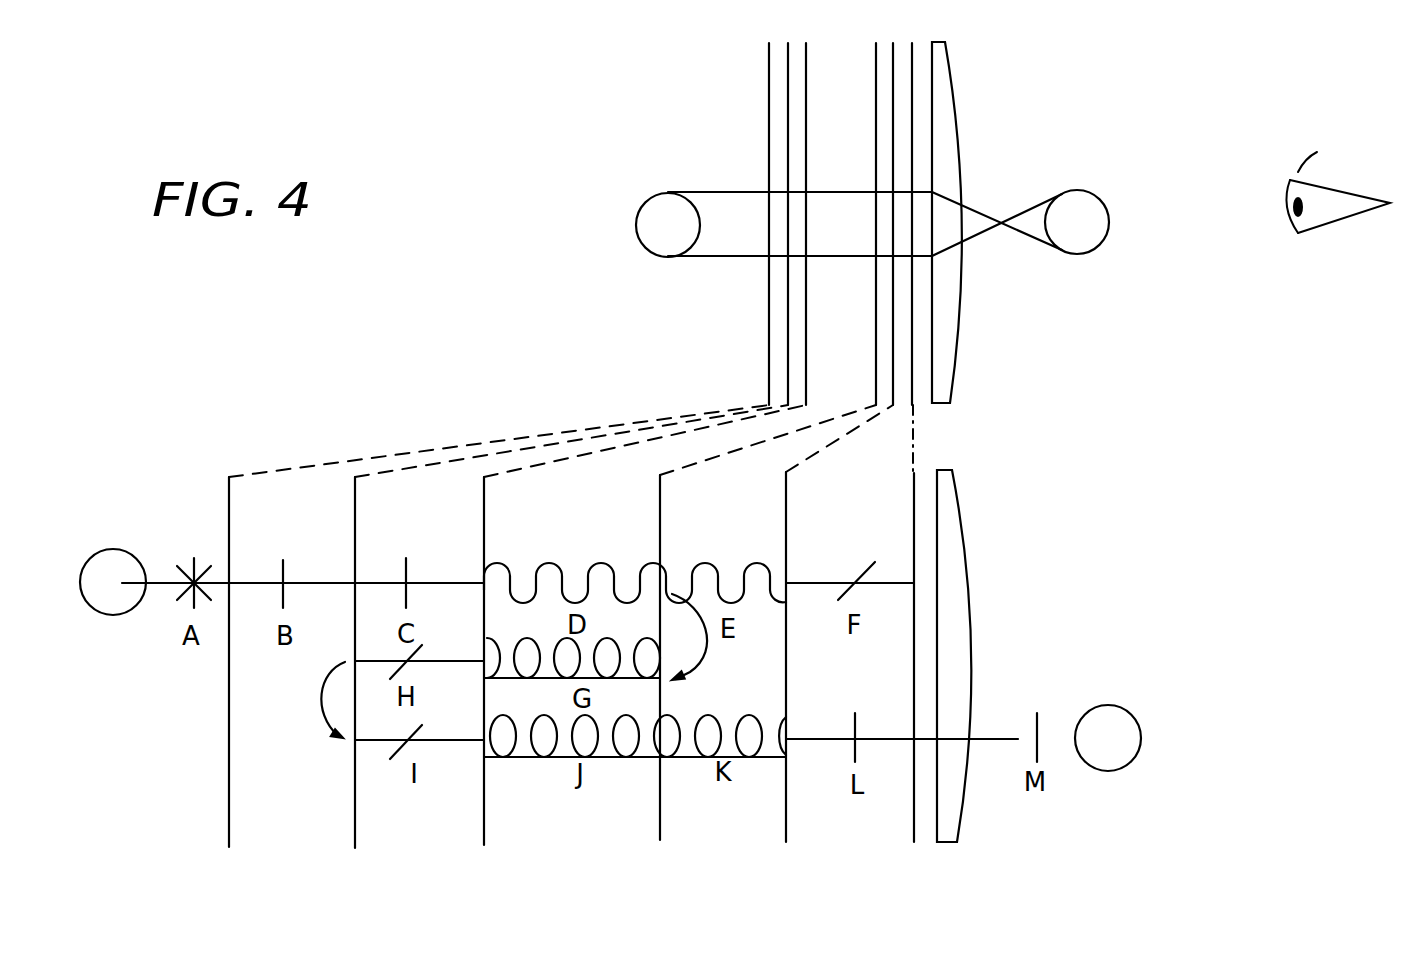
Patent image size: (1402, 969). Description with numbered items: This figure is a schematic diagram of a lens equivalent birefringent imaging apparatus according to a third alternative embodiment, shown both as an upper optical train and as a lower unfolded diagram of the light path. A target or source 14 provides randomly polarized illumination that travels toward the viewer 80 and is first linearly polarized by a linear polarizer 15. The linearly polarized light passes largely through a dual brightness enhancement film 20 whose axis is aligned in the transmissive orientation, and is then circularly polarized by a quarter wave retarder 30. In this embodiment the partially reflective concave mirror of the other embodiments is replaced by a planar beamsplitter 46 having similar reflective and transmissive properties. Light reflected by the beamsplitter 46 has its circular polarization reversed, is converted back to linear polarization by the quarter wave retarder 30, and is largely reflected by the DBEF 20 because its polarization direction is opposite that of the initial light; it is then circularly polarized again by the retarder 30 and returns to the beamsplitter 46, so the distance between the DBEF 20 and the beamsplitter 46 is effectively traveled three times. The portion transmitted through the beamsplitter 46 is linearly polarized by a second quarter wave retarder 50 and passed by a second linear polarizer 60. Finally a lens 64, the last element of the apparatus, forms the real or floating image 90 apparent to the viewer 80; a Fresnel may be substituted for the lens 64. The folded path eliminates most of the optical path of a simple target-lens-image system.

The target or source 14 is at (668, 215).
The real image 90 is at (1086, 207).
The viewer 80 is at (1348, 210).
The linear polarizer 15 is at (222, 685).
The dual brightness enhancement film (DBEF) 20 is at (354, 685).
The quarter wave retarder 30 is at (482, 685).
The planar beamsplitter 46 is at (662, 681).
The second quarter wave retarder 50 is at (785, 681).
The second linear polarizer 60 is at (914, 681).
The lens 64 is at (956, 680).